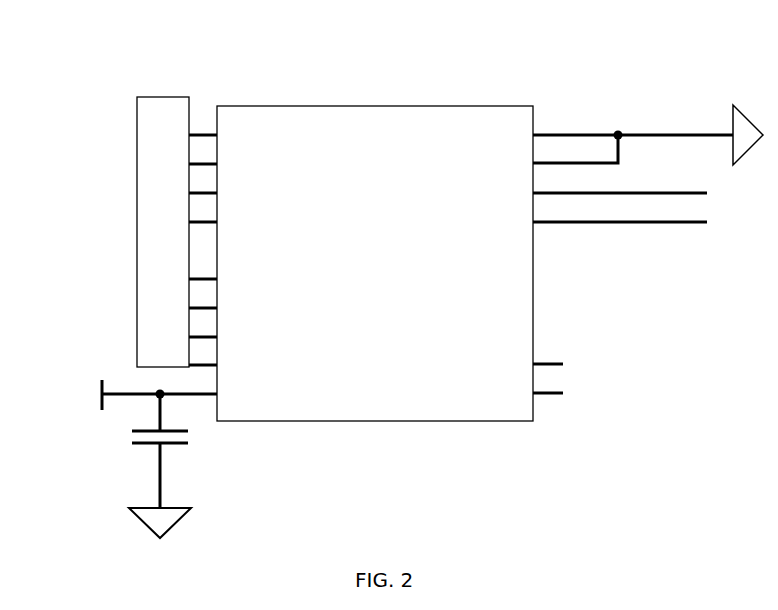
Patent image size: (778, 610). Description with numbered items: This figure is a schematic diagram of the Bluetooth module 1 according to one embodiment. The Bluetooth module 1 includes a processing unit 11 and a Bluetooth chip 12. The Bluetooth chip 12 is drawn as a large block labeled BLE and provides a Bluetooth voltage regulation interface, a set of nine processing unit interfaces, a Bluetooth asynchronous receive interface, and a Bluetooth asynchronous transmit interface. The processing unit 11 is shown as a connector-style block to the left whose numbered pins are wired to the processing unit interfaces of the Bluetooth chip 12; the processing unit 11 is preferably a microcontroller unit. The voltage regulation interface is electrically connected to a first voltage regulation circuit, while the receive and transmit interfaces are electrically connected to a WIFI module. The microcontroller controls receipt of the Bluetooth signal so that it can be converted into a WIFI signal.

The Bluetooth module 1 is at (303, 70).
The processing unit 11 is at (150, 97).
The Bluetooth chip 12 is at (342, 107).